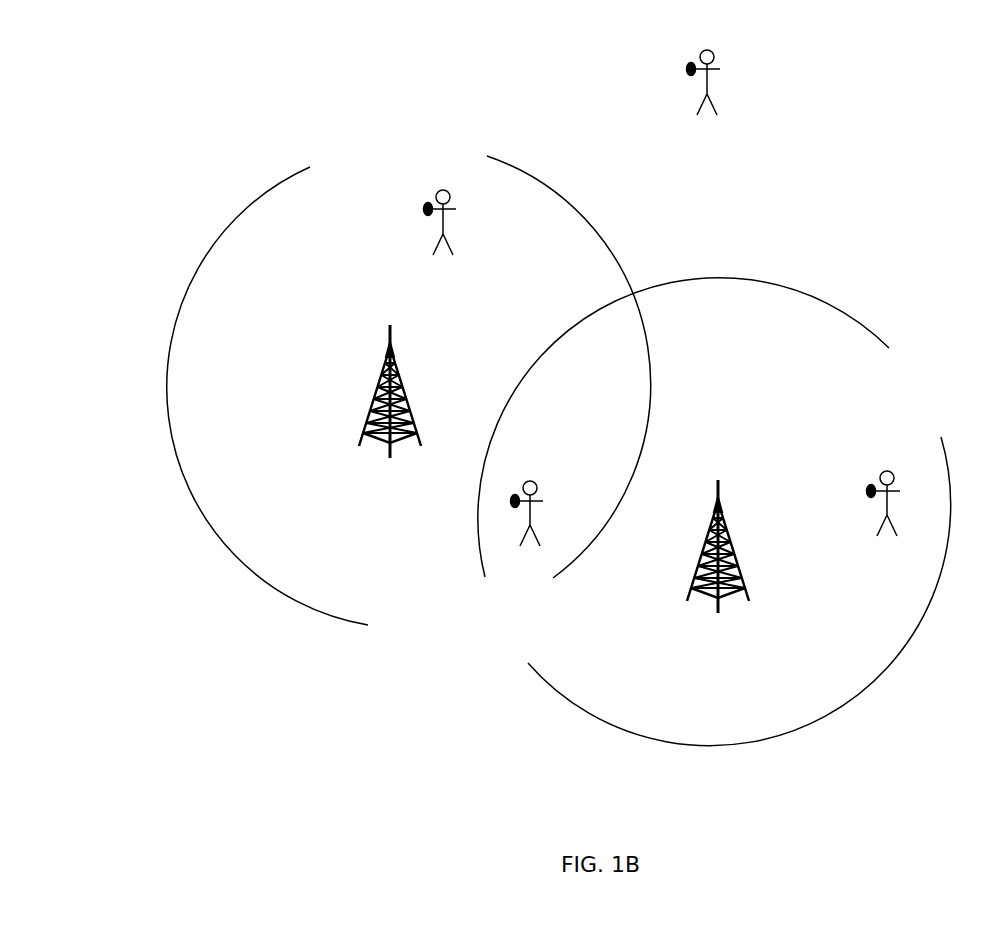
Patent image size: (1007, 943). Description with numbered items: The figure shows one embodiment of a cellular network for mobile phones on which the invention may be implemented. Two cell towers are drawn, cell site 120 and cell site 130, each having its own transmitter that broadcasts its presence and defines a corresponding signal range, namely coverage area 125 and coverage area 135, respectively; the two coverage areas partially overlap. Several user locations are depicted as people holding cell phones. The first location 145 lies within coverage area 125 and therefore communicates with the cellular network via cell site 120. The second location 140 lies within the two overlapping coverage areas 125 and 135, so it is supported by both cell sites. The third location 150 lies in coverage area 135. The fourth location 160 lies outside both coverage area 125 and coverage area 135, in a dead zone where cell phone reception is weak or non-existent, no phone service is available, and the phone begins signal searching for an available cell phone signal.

The cell site 120 is at (335, 506).
The coverage area 125 is at (180, 281).
The cell site 130 is at (659, 661).
The coverage area 135 is at (842, 797).
The second location 140 is at (479, 568).
The first location 145 is at (415, 173).
The third location 150 is at (894, 448).
The fourth location 160 is at (822, 139).